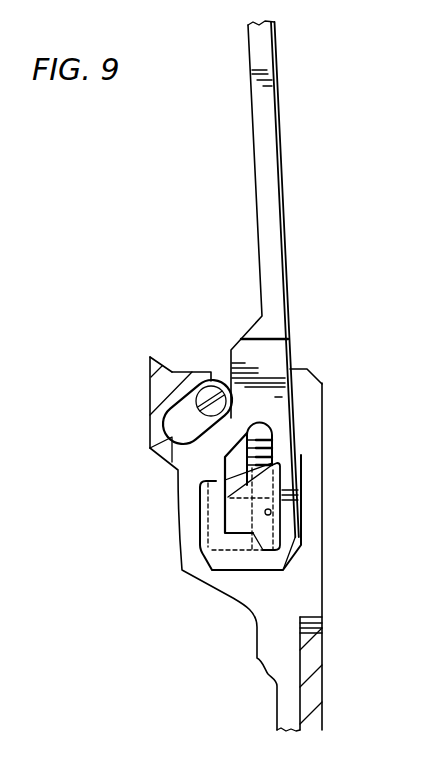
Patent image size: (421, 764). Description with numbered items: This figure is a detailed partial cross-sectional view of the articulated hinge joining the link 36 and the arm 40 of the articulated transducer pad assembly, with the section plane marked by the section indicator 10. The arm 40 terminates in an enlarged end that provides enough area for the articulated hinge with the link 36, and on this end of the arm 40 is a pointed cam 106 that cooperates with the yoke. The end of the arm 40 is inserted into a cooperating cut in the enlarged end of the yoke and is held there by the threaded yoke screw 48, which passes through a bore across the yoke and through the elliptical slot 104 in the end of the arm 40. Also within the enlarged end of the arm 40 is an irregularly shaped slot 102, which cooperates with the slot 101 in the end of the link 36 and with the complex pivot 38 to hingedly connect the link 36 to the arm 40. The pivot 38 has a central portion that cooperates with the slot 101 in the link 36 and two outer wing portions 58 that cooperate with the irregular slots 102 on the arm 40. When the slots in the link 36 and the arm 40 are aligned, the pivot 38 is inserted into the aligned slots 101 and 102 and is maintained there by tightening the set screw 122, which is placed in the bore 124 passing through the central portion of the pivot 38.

The section line indicator 10 is at (264, 135).
The link 36 is at (268, 197).
The complex pivot 38 is at (228, 498).
The arm 40 is at (309, 589).
The threaded yoke screw 48 is at (211, 398).
The outer wing portions 58 is at (265, 538).
The slot 101 is at (227, 455).
The irregularly shaped slot 102 is at (197, 535).
The elliptical slot 104 is at (152, 418).
The pointed cam 106 is at (158, 370).
The set screw 122 is at (273, 438).
The bore 124 is at (280, 513).